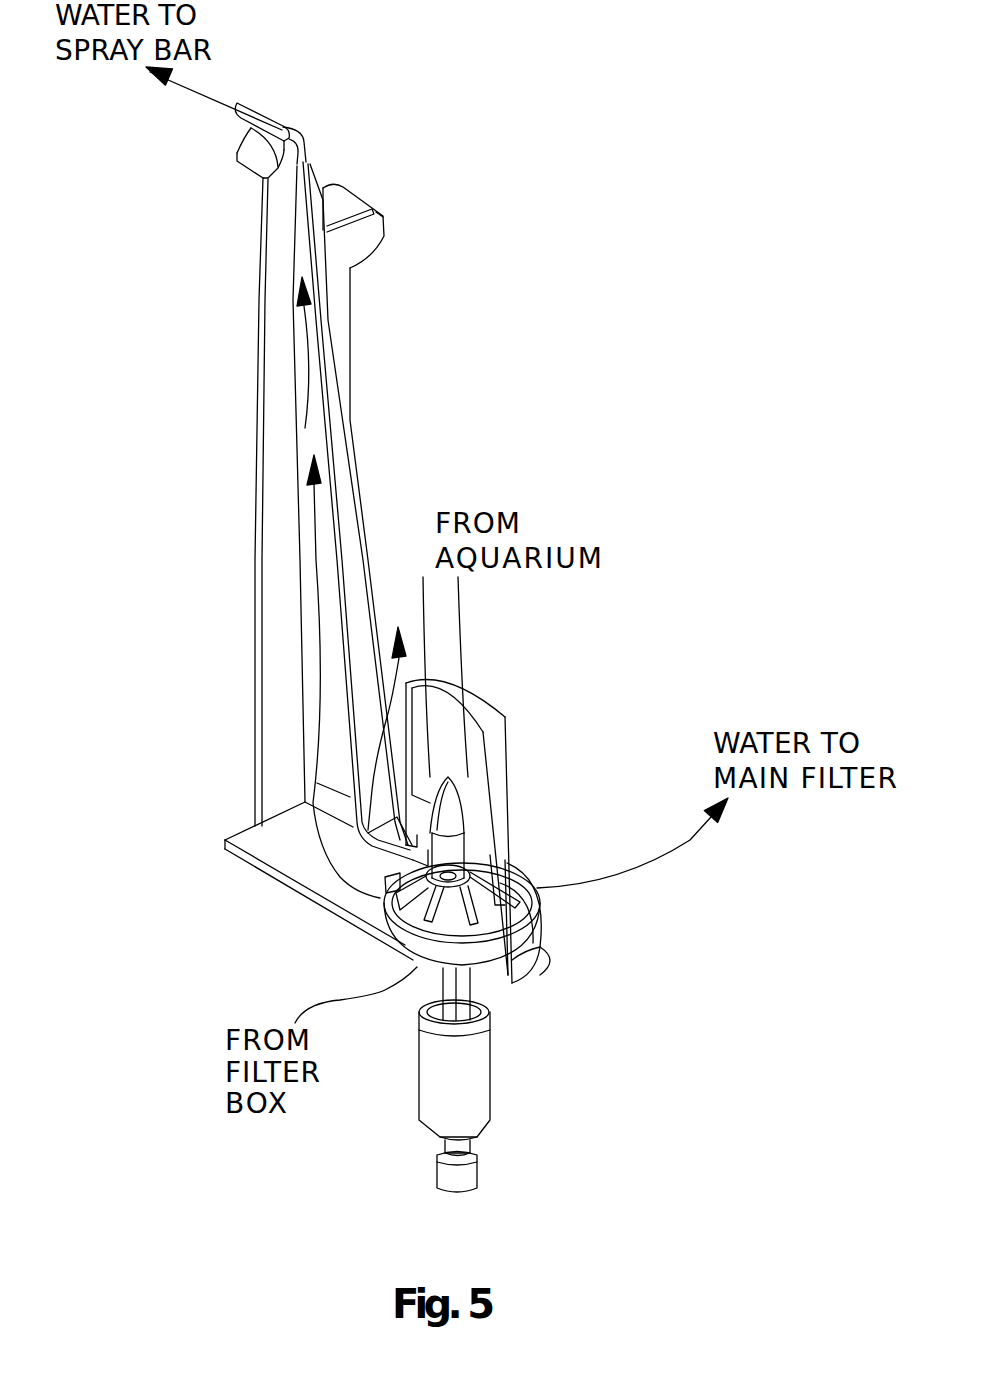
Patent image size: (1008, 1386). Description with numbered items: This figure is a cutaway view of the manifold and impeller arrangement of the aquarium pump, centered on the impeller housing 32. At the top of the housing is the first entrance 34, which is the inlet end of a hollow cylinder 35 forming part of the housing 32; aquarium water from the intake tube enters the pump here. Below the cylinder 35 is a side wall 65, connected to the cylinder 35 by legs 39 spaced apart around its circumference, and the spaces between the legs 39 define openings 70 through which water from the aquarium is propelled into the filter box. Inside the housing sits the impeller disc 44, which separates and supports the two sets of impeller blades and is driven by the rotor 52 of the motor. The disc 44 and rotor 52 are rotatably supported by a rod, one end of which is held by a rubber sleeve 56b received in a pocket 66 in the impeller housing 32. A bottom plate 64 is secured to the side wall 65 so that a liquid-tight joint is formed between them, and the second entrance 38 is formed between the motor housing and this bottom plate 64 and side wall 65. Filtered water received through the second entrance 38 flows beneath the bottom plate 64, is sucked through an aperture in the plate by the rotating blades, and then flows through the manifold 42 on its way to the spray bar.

The impeller housing 32 is at (514, 446).
The manifold 42 is at (353, 428).
The second entrance 38 is at (208, 856).
The first entrance 34 is at (497, 695).
The hollow cylinder 35 is at (500, 752).
The pocket 66 is at (458, 795).
The rubber sleeve 56b is at (452, 847).
The impeller disc 44 is at (405, 922).
The side wall 65 is at (538, 958).
The legs 39 is at (532, 965).
The openings 70 is at (510, 900).
The bottom plate 64 is at (483, 970).
The rotor 52 is at (418, 1088).